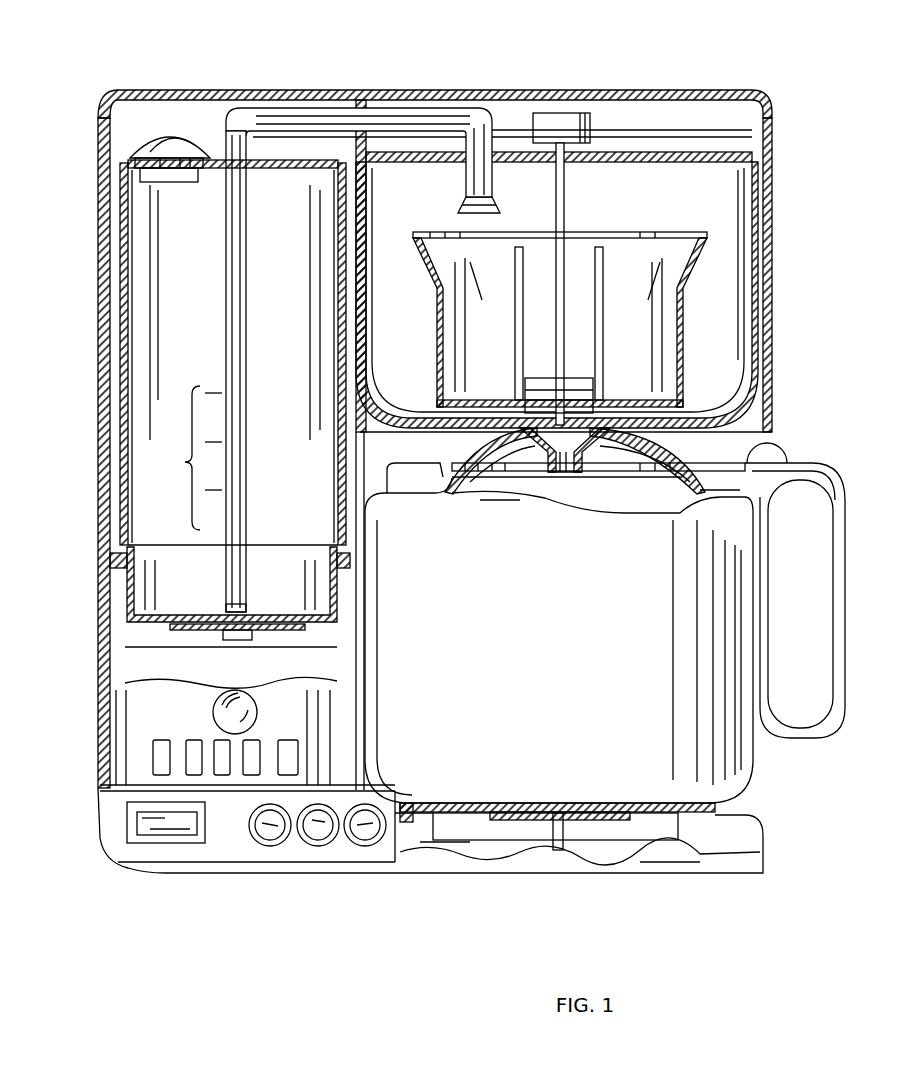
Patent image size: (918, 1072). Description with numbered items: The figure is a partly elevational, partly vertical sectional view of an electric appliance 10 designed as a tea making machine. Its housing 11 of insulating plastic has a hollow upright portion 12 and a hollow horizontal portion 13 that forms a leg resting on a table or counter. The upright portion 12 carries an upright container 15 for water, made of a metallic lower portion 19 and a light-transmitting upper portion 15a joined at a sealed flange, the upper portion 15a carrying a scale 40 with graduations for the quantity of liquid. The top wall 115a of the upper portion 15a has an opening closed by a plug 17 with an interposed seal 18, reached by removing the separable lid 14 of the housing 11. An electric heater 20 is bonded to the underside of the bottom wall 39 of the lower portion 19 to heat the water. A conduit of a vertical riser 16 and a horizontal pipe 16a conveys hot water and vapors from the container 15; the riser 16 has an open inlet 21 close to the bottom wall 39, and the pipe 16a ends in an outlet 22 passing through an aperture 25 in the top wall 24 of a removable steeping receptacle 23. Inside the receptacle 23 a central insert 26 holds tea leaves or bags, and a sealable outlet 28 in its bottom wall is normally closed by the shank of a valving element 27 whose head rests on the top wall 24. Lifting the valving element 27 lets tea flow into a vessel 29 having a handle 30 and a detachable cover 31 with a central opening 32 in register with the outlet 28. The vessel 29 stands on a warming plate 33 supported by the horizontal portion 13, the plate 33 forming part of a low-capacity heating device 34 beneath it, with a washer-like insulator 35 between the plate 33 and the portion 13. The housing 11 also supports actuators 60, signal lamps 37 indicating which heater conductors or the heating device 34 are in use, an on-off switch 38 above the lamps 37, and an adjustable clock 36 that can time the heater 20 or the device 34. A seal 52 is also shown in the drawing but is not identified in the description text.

The electric appliance 10 is at (413, 440).
The housing 11 is at (97, 427).
The upright portion 12 is at (100, 332).
The horizontal portion 13 is at (468, 866).
The lid 14 is at (190, 90).
The container 15 is at (120, 287).
The upper portion of container 15a is at (121, 242).
The top wall 115a is at (276, 160).
The riser 16 is at (238, 358).
The horizontal pipe 16a is at (340, 108).
The plug 17 is at (170, 148).
The seal 18 is at (135, 166).
The lower portion of container 19 is at (128, 600).
The electric heater 20 is at (170, 630).
The inlet 21 is at (247, 612).
The outlet 22 is at (488, 216).
The steeping receptacle 23 is at (762, 213).
The top wall of receptacle 24 is at (720, 158).
The aperture 25 is at (507, 110).
The insert 26 is at (684, 352).
The valving element 27 is at (560, 272).
The sealable outlet 28 is at (586, 422).
The vessel 29 is at (762, 772).
The handle 30 is at (803, 740).
The cover 31 is at (660, 455).
The opening 32 is at (566, 466).
The warming plate 33 is at (725, 811).
The heating device 34 is at (605, 822).
The insulator 35 is at (437, 826).
The clock 36 is at (150, 824).
The signal lamps 37 is at (273, 842).
The on-off switch 38 is at (226, 713).
The bottom wall 39 is at (322, 633).
The scale 40 is at (187, 458).
The seal 52 is at (127, 560).
The actuators 60 is at (160, 758).